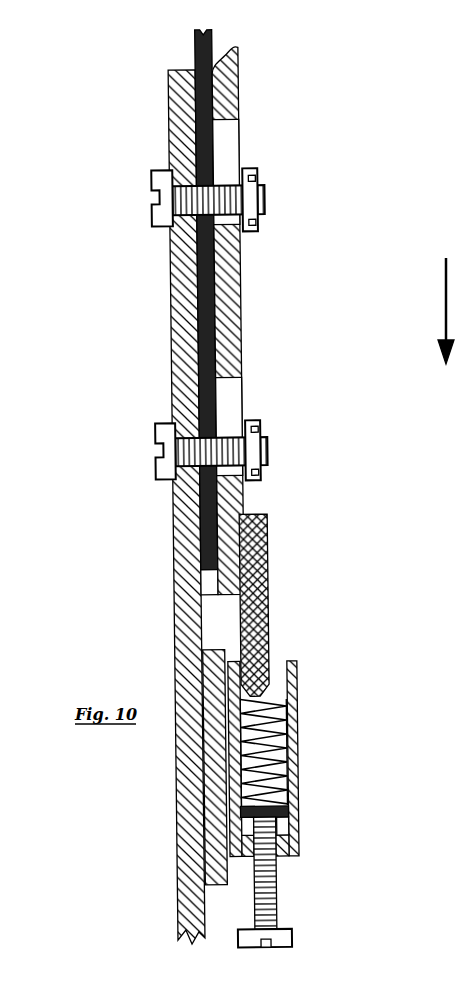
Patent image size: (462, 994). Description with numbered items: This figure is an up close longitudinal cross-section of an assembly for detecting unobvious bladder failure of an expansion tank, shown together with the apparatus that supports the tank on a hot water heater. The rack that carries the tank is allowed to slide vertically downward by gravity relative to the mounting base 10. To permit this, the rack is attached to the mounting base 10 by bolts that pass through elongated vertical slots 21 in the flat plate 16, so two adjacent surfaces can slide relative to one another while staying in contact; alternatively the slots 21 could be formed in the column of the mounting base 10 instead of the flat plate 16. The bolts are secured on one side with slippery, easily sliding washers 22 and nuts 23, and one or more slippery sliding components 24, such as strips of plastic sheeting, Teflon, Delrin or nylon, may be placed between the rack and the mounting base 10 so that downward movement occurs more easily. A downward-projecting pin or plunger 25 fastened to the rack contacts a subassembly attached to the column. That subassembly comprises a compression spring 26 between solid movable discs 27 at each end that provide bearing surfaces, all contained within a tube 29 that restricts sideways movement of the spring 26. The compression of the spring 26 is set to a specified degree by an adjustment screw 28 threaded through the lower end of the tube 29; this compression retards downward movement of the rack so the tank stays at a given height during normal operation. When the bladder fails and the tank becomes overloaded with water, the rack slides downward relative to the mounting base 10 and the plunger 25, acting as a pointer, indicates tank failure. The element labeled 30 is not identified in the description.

The mounting base 10 is at (180, 300).
The flat plate 16 is at (235, 95).
The elongated vertical slots 21 is at (158, 178).
The washers 22 is at (232, 160).
The nuts 23 is at (247, 168).
The slippery sliding components 24 is at (250, 218).
The plunger 25 is at (195, 47).
The compression spring 26 is at (268, 553).
The movable discs 27 is at (285, 778).
The adjustment screw 28 is at (298, 680).
The tube 29 is at (275, 886).
The spring 30 is at (290, 742).